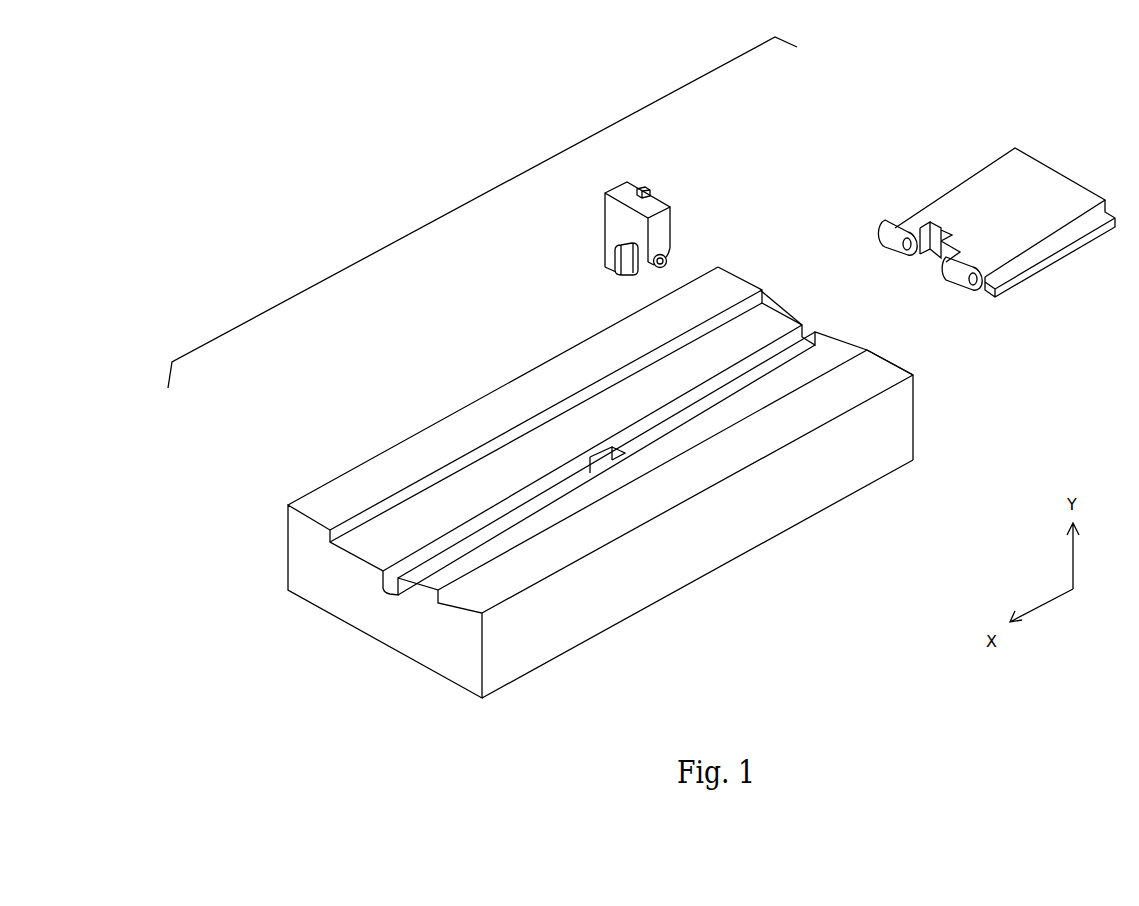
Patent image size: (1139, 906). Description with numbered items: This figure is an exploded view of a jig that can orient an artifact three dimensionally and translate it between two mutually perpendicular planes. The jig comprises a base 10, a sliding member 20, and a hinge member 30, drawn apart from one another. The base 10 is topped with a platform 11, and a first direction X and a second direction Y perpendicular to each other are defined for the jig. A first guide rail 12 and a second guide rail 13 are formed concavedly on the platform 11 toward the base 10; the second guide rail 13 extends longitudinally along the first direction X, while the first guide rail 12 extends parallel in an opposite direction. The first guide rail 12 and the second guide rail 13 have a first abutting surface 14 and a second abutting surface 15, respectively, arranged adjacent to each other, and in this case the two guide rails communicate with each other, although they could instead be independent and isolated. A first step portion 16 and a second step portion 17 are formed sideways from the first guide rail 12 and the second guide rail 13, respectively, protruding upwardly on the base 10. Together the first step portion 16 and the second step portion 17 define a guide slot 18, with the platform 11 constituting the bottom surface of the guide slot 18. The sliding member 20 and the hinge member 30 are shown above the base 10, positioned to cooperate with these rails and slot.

The base 10 is at (614, 456).
The platform 11 is at (473, 487).
The first guide rail 12 is at (665, 406).
The second guide rail 13 is at (417, 560).
The first abutting surface 14 is at (575, 453).
The second abutting surface 15 is at (593, 447).
The first step portion 16 is at (398, 465).
The second step portion 17 is at (880, 368).
The guide slot 18 is at (780, 302).
The sliding member 20 is at (973, 193).
The hinge member 30 is at (607, 216).